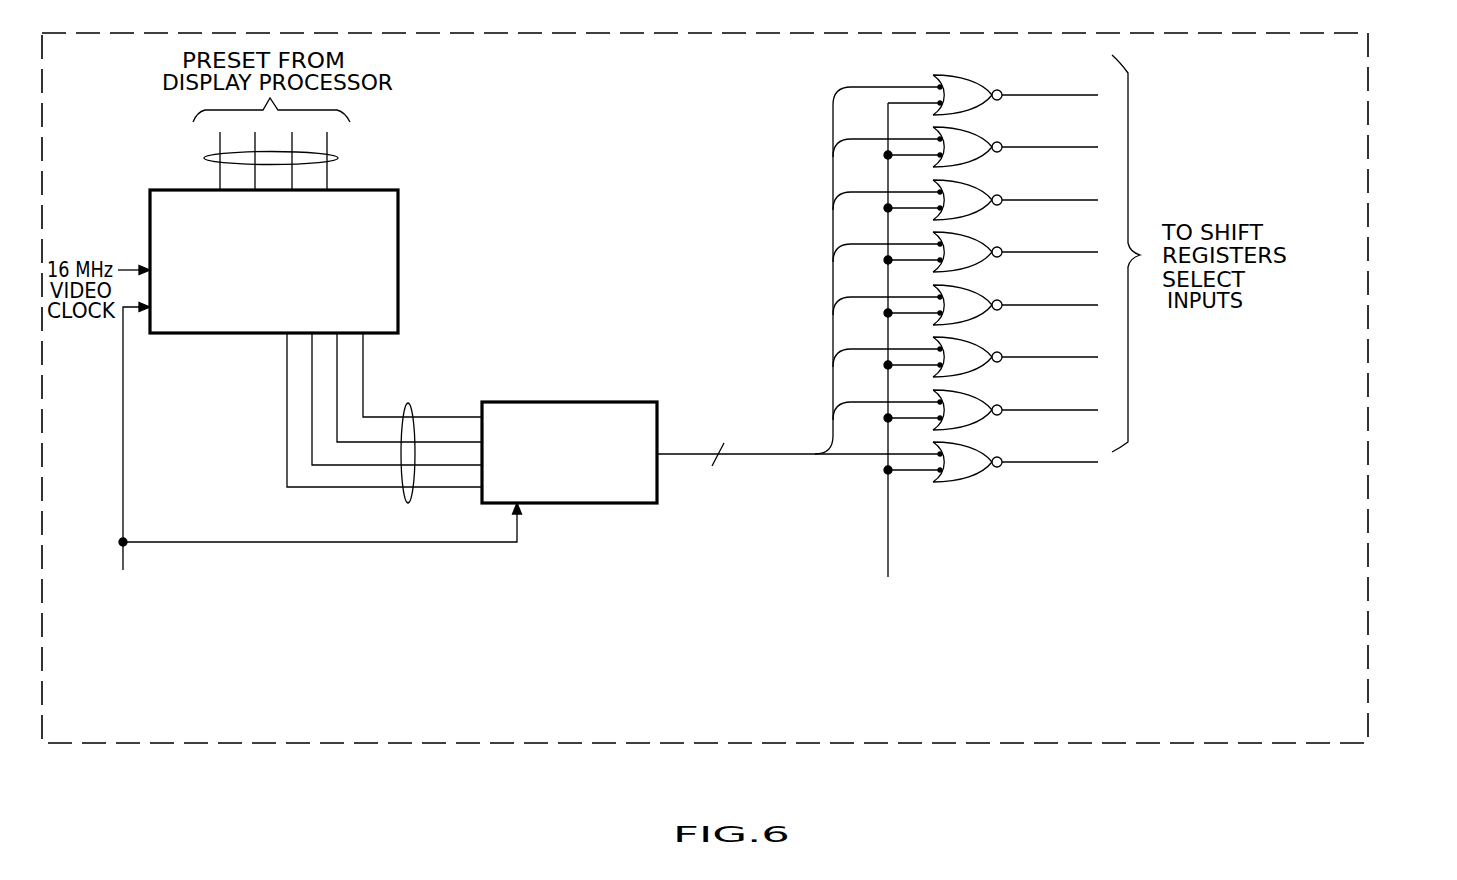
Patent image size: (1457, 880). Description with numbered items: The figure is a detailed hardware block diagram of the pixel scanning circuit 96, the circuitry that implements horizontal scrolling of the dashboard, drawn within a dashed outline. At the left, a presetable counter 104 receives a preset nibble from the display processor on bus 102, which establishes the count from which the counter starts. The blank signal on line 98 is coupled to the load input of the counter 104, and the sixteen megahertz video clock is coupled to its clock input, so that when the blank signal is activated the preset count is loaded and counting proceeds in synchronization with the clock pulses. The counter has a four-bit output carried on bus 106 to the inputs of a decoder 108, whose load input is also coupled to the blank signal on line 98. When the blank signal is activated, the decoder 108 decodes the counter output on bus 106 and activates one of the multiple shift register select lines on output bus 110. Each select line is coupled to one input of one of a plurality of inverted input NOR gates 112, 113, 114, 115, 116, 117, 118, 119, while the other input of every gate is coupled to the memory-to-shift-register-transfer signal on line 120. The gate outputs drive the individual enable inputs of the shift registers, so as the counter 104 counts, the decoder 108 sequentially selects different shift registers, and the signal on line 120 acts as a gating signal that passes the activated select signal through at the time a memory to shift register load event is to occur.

The pixel scanning circuit 96 is at (1368, 418).
The blank signal line 98 is at (345, 542).
The preset nibble bus 102 is at (338, 158).
The presetable counter 104 is at (398, 248).
The counter output bus 106 is at (408, 403).
The decoder 108 is at (562, 402).
The output bus of shift register select lines 110 is at (747, 454).
The inverted input NOR gate 112 is at (968, 74).
The inverted input NOR gate 113 is at (968, 131).
The inverted input NOR gate 114 is at (968, 184).
The inverted input NOR gate 115 is at (968, 236).
The inverted input NOR gate 116 is at (968, 289).
The inverted input NOR gate 117 is at (968, 341).
The inverted input NOR gate 118 is at (968, 394).
The inverted input NOR gate 119 is at (968, 446).
The memory-to-shift-register-transfer signal line 120 is at (888, 533).